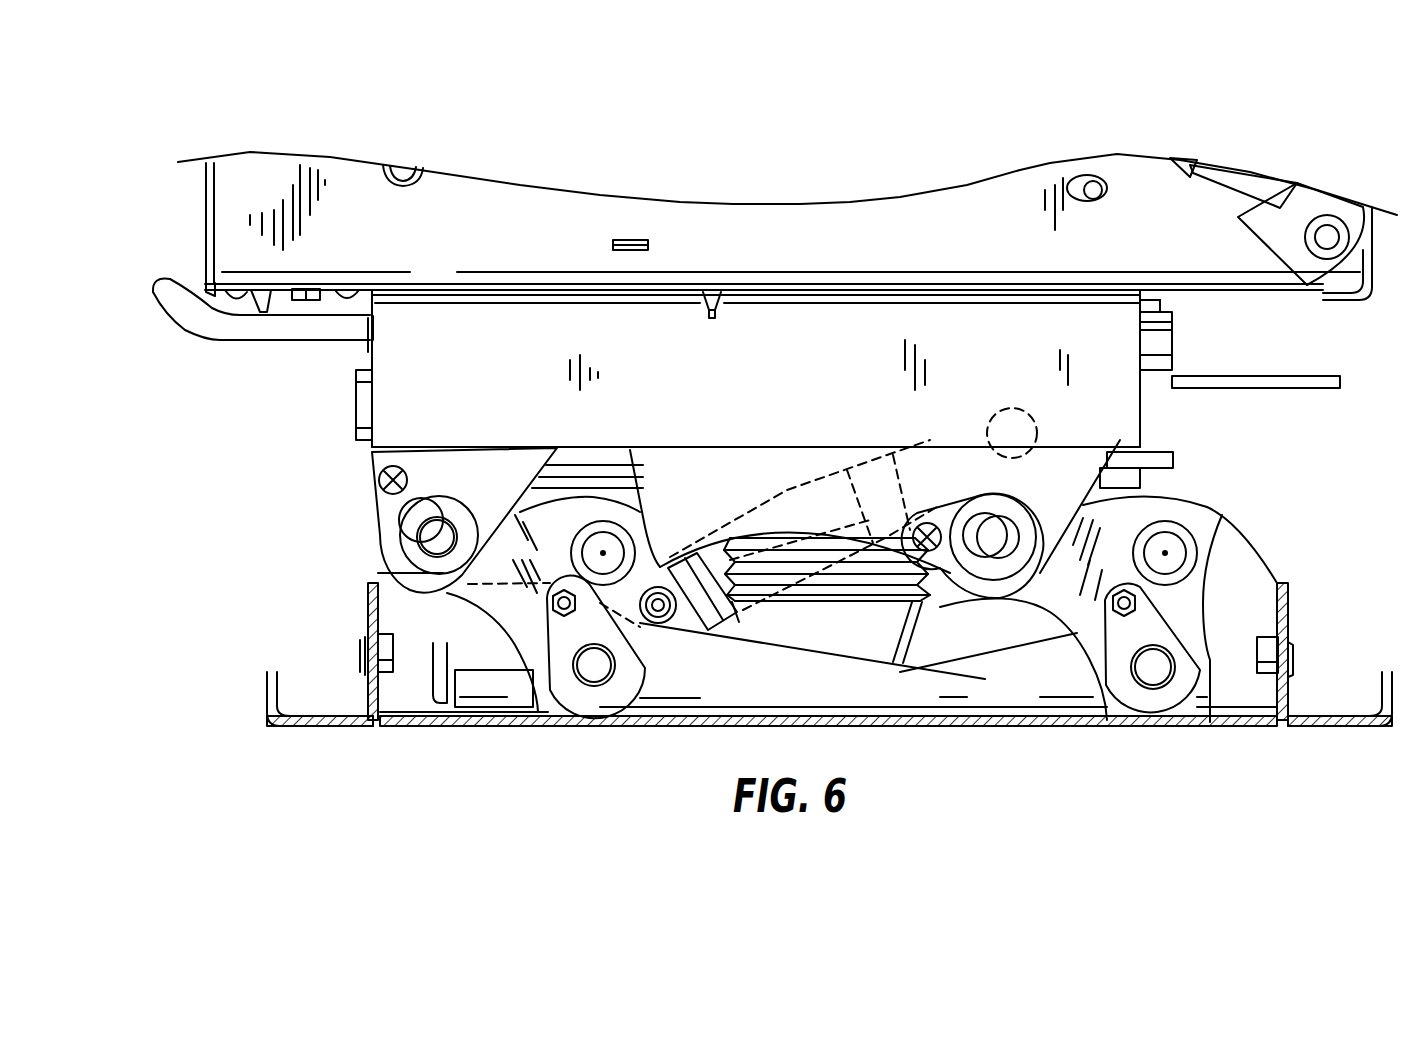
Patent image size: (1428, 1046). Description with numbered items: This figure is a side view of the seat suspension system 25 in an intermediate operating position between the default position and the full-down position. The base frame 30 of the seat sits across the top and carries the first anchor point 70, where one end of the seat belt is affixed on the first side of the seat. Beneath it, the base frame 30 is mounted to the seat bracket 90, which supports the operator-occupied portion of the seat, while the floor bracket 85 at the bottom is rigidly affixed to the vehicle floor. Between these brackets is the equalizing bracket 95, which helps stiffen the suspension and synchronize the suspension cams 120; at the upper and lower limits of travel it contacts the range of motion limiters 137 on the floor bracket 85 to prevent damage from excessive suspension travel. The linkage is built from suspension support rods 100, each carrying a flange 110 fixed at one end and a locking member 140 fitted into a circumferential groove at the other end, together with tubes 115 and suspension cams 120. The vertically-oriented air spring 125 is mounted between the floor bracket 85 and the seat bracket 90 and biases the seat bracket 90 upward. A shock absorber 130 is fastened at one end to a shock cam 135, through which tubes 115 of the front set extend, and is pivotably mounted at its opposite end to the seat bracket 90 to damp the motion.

The suspension system 25 is at (175, 538).
The base frame 30 is at (885, 225).
The first anchor point 70 is at (1330, 232).
The floor bracket 85 is at (405, 730).
The seat bracket 90 is at (1073, 468).
The equalizing bracket 95 is at (1000, 683).
The suspension support rod 100 is at (440, 540).
The flange 110 is at (575, 690).
The tube 115 is at (610, 540).
The suspension cam 120 is at (503, 603).
The air spring 125 is at (870, 640).
The shock absorber 130 is at (805, 485).
The shock cam 135 is at (668, 637).
The range of motion limiter 137 is at (385, 647).
The locking member 140 is at (410, 490).